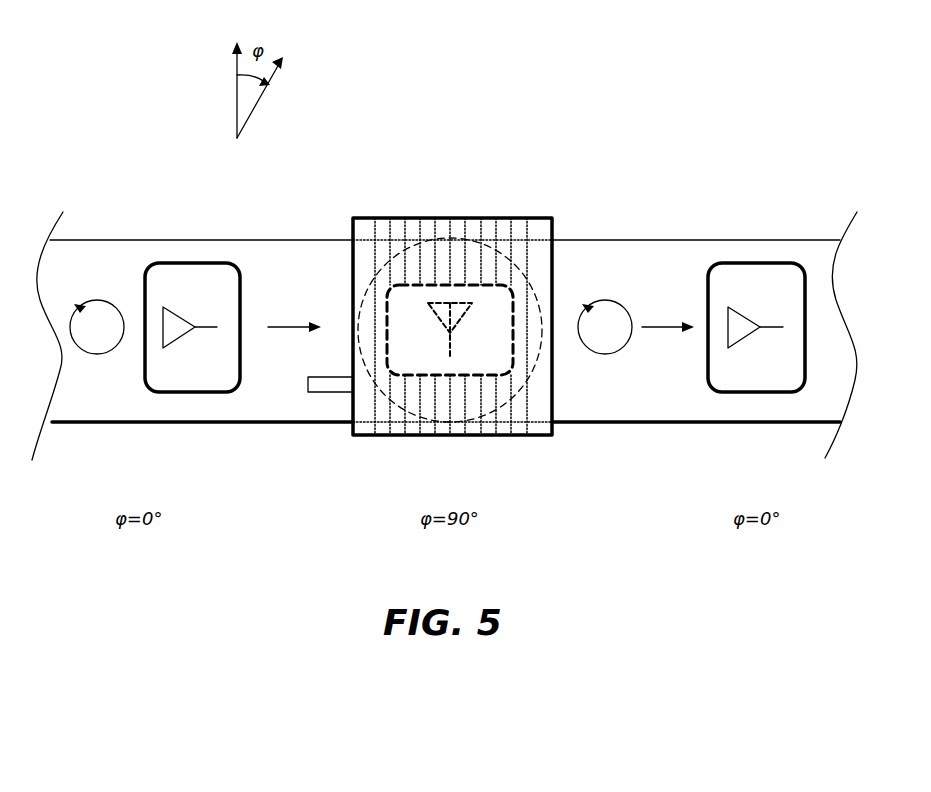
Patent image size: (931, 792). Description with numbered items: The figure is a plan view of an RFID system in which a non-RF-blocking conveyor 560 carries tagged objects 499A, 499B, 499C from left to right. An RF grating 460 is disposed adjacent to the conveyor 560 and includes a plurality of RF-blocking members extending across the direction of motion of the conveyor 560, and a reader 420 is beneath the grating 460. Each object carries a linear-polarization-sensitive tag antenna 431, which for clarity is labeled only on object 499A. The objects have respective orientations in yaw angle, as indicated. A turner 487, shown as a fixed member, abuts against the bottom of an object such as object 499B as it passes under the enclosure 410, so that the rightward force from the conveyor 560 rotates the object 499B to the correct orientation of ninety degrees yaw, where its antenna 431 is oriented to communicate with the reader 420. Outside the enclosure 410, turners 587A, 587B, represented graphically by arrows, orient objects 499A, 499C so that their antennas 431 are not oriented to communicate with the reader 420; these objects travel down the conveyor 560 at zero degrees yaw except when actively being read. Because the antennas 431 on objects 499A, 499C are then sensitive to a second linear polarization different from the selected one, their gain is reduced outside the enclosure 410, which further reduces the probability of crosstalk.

The non-RF-blocking conveyor 560 is at (187, 240).
The turner 587A is at (80, 303).
The tag antenna 431 is at (188, 307).
The tagged object 499A is at (192, 364).
The turner 487 is at (330, 397).
The enclosure 410 is at (502, 435).
The reader 420 is at (525, 235).
The RF grating 460 is at (527, 400).
The tagged object 499B is at (450, 377).
The turner 587B is at (590, 303).
The tagged object 499C is at (755, 392).